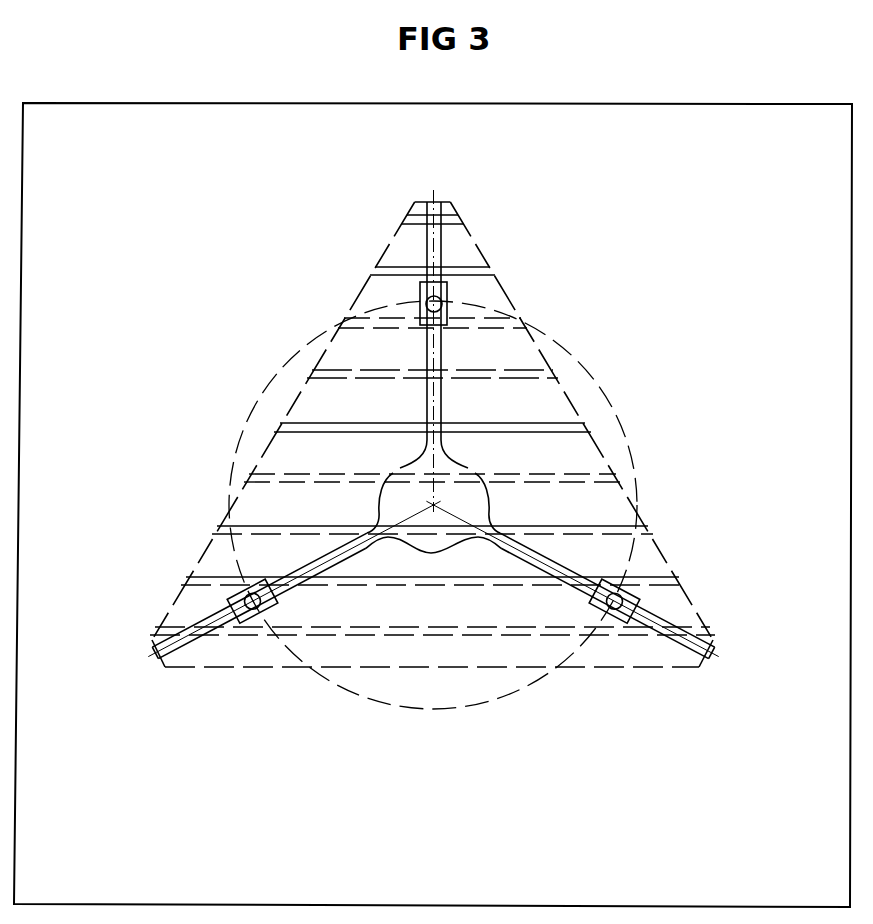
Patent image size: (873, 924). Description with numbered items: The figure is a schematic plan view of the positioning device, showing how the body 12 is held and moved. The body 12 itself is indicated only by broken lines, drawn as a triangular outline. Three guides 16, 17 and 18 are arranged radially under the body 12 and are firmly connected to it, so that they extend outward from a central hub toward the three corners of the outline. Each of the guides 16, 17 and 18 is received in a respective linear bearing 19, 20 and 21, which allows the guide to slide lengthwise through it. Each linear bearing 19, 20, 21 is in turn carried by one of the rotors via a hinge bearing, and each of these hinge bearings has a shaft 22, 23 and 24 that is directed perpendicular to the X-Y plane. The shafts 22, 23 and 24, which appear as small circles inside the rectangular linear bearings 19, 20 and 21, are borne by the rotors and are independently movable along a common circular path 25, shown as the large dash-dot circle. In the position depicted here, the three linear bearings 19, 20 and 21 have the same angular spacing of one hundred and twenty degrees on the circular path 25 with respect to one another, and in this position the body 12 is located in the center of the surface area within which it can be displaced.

The body 12 is at (455, 242).
The guide 16 is at (441, 357).
The guide 17 is at (554, 562).
The guide 18 is at (333, 566).
The linear bearing 19 is at (447, 298).
The linear bearing 20 is at (637, 603).
The linear bearing 21 is at (251, 606).
The shaft 22 is at (420, 298).
The shaft 23 is at (613, 612).
The shaft 24 is at (235, 603).
The circular path 25 is at (604, 392).